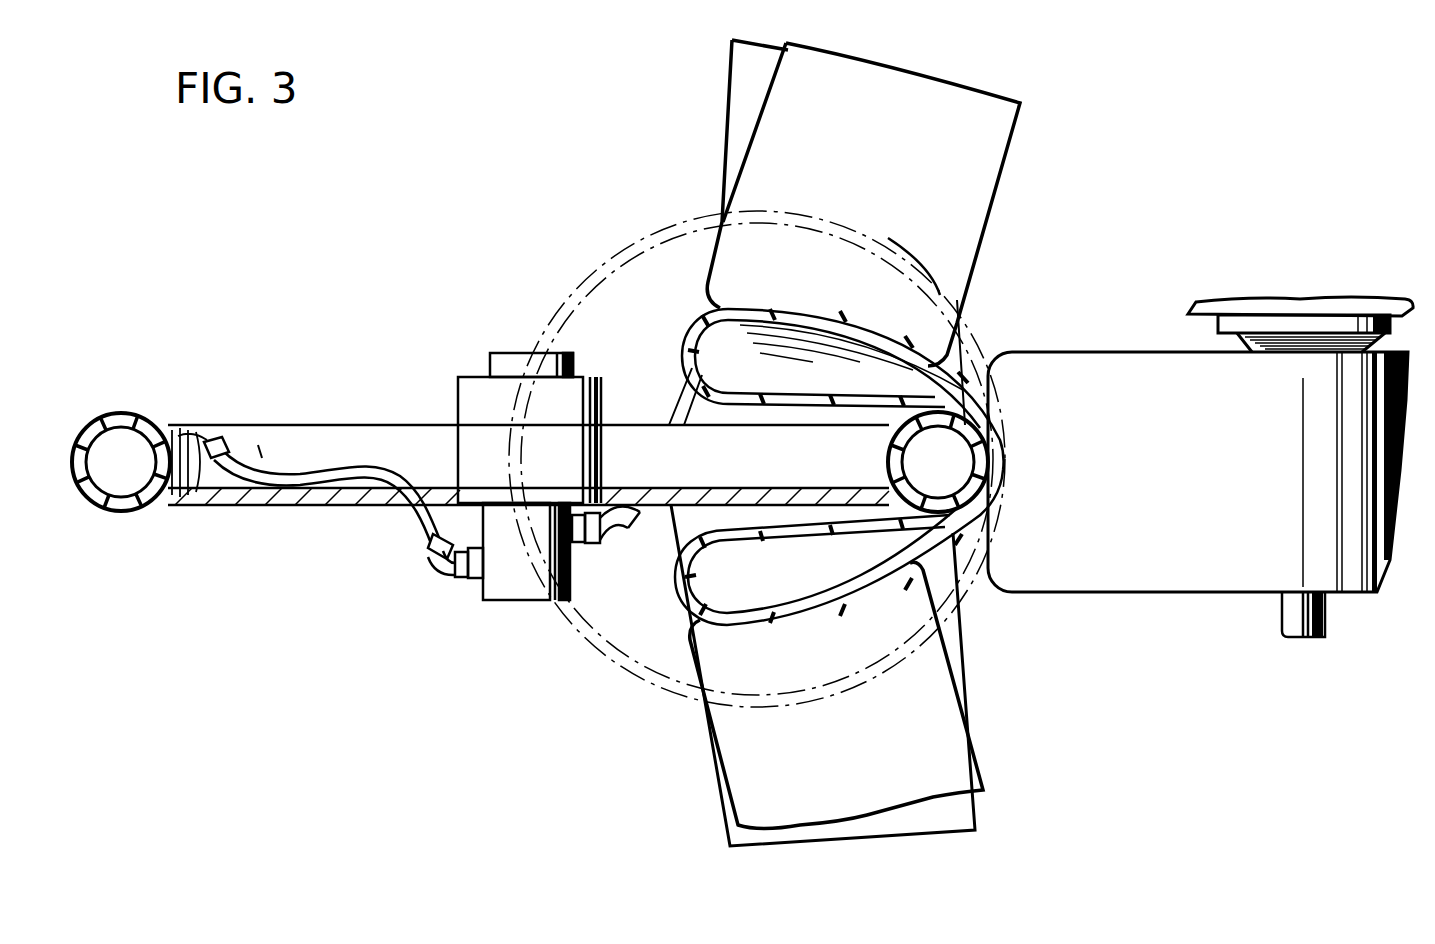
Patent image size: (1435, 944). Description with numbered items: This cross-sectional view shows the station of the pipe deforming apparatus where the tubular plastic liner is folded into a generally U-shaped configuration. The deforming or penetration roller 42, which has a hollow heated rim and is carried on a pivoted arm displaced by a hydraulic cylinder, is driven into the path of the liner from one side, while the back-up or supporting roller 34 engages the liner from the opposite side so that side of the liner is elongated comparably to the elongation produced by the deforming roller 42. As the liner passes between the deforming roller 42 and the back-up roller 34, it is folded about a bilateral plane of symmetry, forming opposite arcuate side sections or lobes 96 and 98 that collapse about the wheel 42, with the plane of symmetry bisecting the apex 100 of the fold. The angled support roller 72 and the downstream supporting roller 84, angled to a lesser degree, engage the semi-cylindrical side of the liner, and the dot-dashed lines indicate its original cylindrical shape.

The back-up roller 34 is at (1113, 351).
The deforming roller 42 is at (147, 505).
The support roller 72 is at (982, 240).
The supporting roller 84 is at (722, 148).
The lobe 96 is at (778, 305).
The lobe 98 is at (682, 604).
The apex 100 is at (1010, 488).